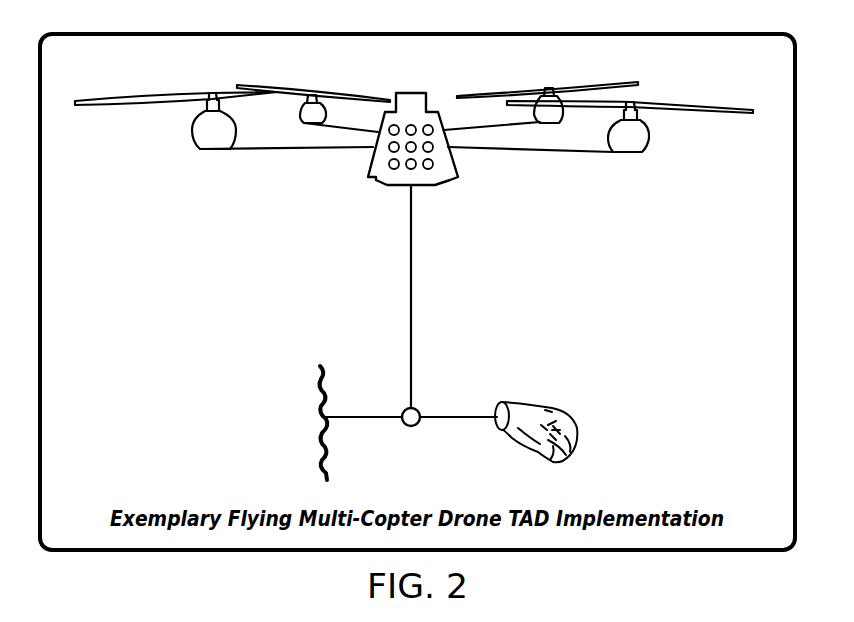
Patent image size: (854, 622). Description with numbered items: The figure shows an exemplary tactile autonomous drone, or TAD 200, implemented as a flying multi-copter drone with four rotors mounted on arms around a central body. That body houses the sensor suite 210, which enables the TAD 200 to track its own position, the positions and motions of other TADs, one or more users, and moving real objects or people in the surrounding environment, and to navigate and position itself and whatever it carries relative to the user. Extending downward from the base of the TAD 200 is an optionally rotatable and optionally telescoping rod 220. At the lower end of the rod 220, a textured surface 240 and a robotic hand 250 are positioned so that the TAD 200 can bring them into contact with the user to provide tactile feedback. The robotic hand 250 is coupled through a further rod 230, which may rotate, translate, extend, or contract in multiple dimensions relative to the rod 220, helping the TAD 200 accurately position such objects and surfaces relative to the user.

The TAD 200 is at (414, 165).
The sensor suite 210 is at (387, 171).
The rod 220 is at (405, 285).
The rods 230 is at (442, 413).
The textured surface 240 is at (298, 408).
The robotic hand 250 is at (551, 401).